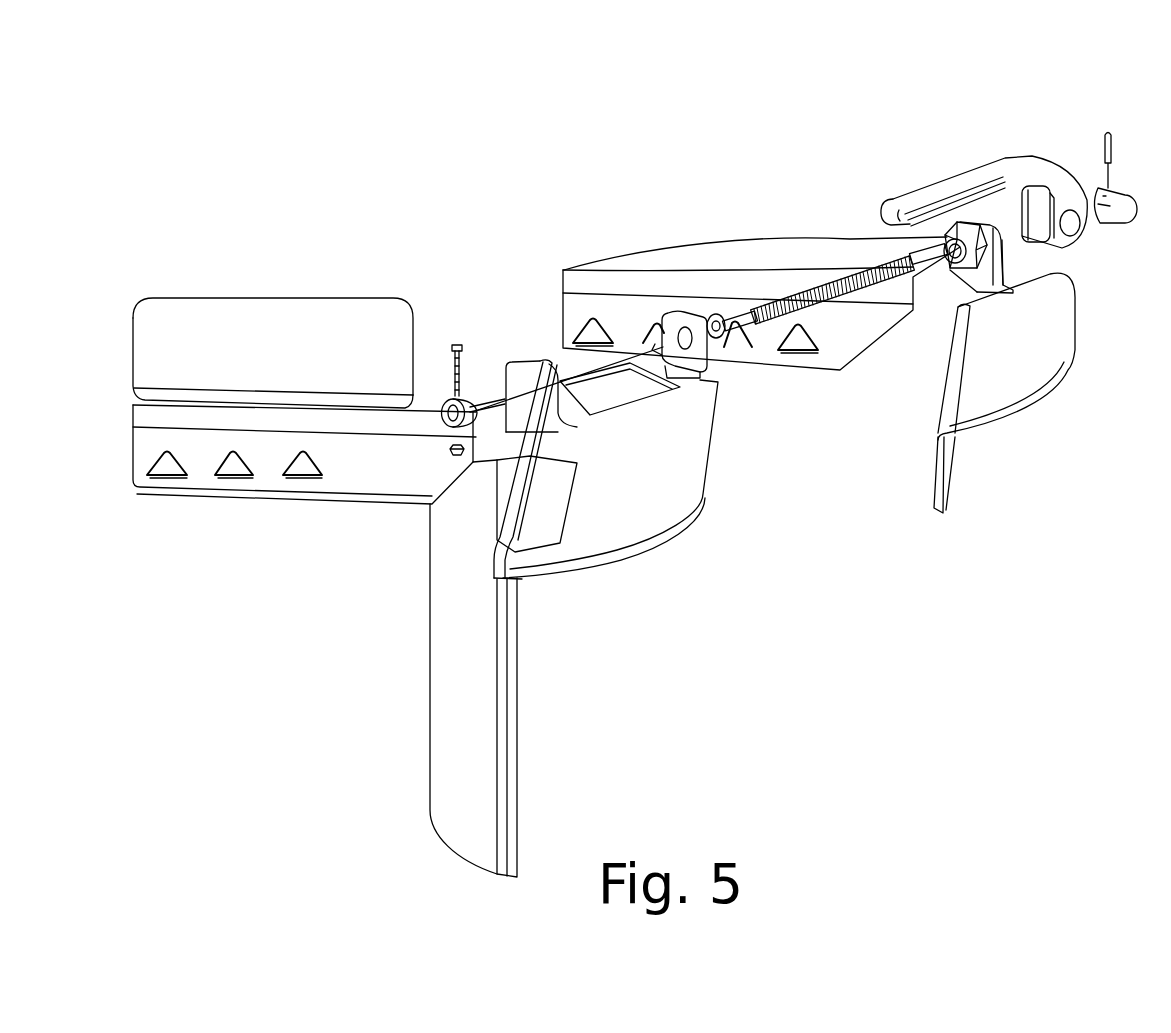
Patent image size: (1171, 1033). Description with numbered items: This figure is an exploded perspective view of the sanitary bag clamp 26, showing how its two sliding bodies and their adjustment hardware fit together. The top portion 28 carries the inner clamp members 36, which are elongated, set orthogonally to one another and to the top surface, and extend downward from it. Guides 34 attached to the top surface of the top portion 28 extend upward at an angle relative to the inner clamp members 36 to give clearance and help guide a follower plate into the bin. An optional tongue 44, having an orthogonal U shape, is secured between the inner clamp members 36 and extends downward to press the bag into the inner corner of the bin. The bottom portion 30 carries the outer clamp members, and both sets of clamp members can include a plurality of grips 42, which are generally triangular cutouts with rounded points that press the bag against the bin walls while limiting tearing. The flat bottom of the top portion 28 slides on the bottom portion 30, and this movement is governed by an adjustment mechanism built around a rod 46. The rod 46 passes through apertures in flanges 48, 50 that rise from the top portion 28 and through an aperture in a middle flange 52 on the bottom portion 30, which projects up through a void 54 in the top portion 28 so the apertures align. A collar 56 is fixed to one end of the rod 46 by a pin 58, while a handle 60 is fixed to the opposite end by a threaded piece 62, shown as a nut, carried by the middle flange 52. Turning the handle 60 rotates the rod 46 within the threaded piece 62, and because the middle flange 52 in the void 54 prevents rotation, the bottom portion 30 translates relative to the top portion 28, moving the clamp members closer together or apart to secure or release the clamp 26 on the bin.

The bag clamp 26 is at (970, 92).
The top portion 28 is at (603, 480).
The bottom portion 30 is at (988, 361).
The guides 34 is at (237, 362).
The inner clamp members 36 is at (365, 467).
The grips 42 is at (303, 470).
The tongue 44 is at (445, 736).
The rod 46 is at (795, 294).
The flange 48 is at (510, 377).
The flange 50 is at (990, 262).
The middle flange 52 is at (712, 355).
The void 54 is at (650, 400).
The collar 56 is at (446, 401).
The pin 58 is at (465, 347).
The handle 60 is at (1003, 158).
The threaded piece 62 is at (973, 265).